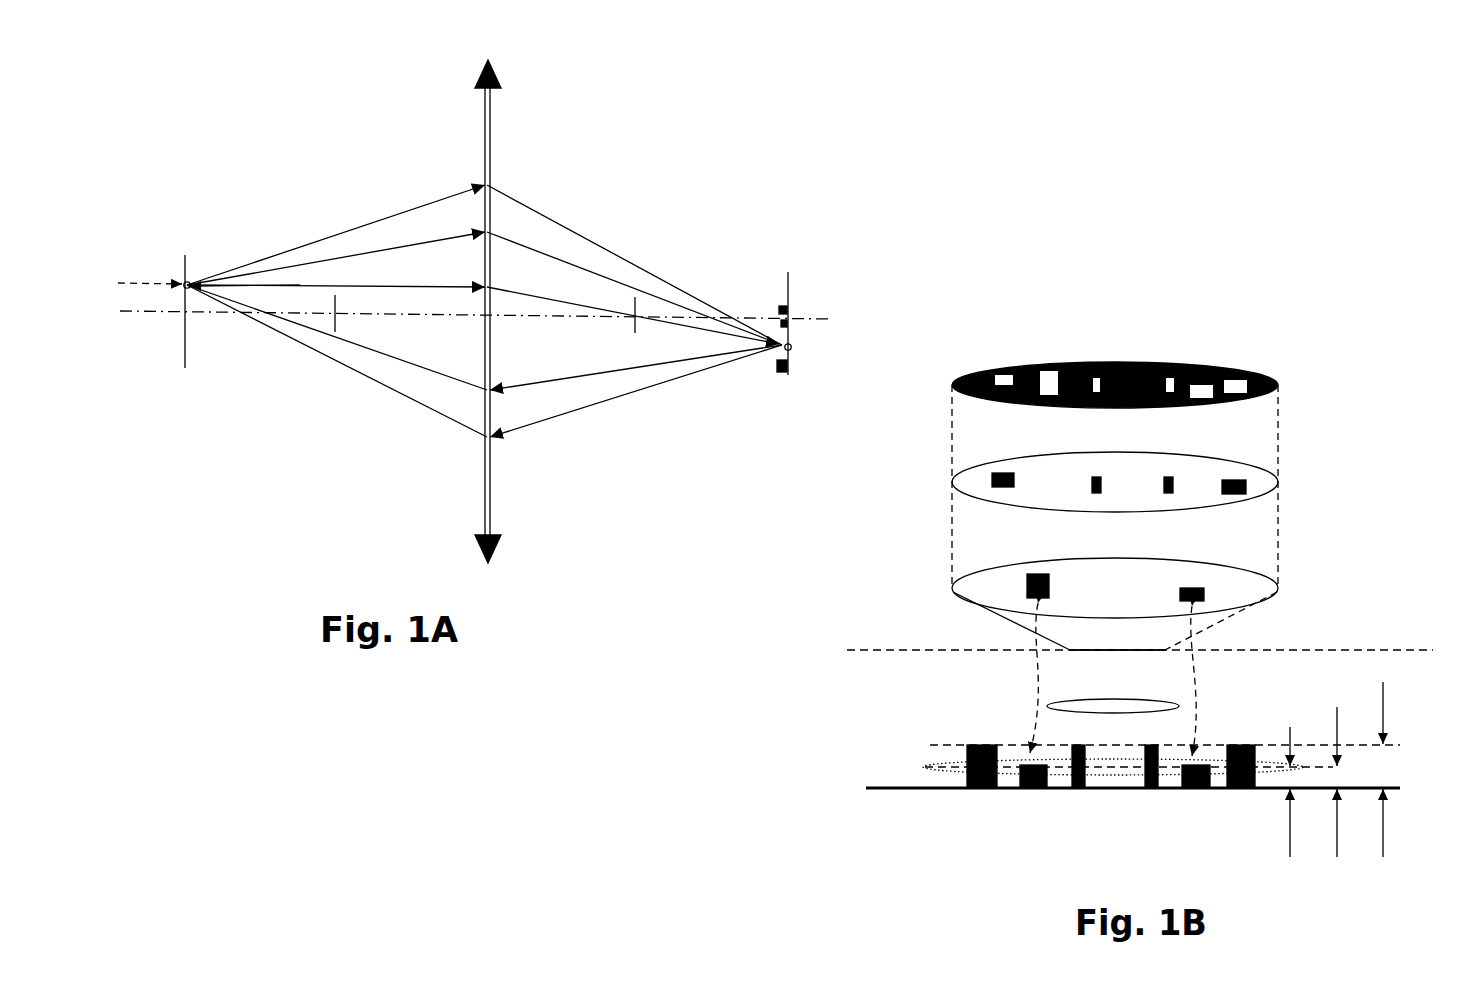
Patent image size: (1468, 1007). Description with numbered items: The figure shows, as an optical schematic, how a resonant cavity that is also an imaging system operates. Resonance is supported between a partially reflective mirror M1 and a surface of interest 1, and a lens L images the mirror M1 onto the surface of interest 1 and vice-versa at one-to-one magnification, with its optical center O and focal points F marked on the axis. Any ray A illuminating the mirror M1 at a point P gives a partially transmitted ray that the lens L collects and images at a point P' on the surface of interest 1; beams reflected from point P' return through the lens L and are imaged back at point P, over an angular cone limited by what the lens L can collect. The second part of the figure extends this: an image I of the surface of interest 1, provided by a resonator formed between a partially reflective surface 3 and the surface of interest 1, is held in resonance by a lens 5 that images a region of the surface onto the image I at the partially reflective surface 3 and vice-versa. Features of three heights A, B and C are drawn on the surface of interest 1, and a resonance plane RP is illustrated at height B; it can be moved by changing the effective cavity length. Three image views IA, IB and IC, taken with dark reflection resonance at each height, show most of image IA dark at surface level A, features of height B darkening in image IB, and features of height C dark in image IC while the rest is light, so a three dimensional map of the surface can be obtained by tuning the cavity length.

In FIG. 1A, the ray / surface height A is at (137, 271).
In FIG. 1B, the ray / surface height A is at (1299, 781).
In FIG. 1A, the point P on mirror M1 P is at (335, 311).
In FIG. 1A, the point P' on surface of interest P' is at (658, 311).
In FIG. 1A, the mirror M1 is at (188, 338).
In FIG. 1A, the focal point F is at (485, 326).
In FIG. 1A, the lens L is at (495, 311).
In FIG. 1A, the optical center O is at (476, 325).
In FIG. 1A, the surface of interest 1 is at (790, 292).
In FIG. 1B, the surface of interest 1 is at (866, 752).
In FIG. 1B, the image view IA is at (958, 372).
In FIG. 1B, the image view IB is at (996, 562).
In FIG. 1B, the image view IC is at (980, 459).
In FIG. 1B, the partially reflective surface 3 is at (872, 646).
In FIG. 1B, the image I is at (1078, 651).
In FIG. 1B, the lens 5 is at (1176, 701).
In FIG. 1B, the resonance plane RP is at (924, 764).
In FIG. 1B, the feature height B is at (1349, 781).
In FIG. 1B, the feature height C is at (1395, 769).